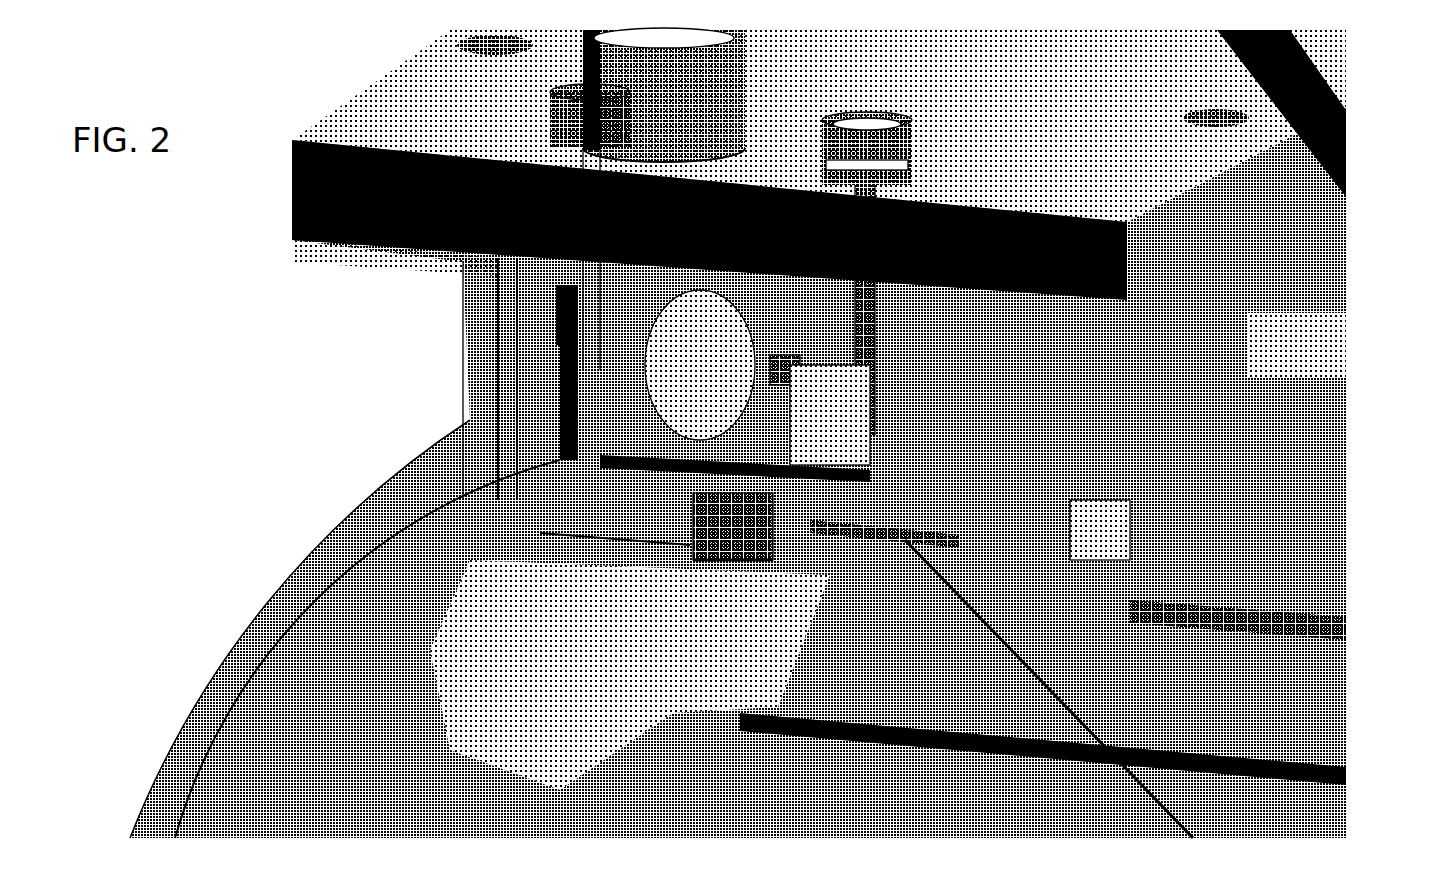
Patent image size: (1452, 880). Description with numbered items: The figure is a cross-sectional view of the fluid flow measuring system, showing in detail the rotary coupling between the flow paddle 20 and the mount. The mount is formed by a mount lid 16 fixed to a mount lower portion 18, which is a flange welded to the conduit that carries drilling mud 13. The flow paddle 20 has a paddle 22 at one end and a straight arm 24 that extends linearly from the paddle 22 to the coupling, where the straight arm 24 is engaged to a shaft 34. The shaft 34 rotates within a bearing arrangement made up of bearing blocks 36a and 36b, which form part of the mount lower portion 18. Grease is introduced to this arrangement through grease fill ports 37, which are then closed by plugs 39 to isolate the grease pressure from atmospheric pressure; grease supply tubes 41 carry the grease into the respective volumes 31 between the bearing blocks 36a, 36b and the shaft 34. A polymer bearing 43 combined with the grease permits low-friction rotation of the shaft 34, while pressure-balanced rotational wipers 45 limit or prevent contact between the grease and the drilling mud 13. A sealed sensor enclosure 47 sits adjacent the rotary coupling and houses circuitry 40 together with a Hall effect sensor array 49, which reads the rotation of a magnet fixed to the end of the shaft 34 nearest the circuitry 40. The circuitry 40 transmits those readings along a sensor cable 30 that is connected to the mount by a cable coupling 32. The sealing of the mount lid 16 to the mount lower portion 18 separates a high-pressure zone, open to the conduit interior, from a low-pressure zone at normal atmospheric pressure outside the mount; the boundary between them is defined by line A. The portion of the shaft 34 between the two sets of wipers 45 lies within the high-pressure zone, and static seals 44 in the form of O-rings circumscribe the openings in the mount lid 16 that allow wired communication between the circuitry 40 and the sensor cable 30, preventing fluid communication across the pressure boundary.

The drilling mud 13 is at (575, 799).
The mount lid 16 is at (370, 124).
The mount lower portion 18 is at (358, 258).
The flow paddle 20 is at (1150, 540).
The paddle 22 is at (1320, 620).
The straight arm 24 is at (1040, 533).
The sensor cable 30 is at (1323, 127).
The volume 31 is at (860, 432).
The cable coupling 32 is at (717, 78).
The shaft 34 is at (807, 420).
The bearing block 36a is at (607, 488).
The bearing block 36b is at (865, 517).
The grease fill port 37 is at (902, 179).
The plug 39 is at (877, 148).
The circuitry 40 is at (578, 423).
The grease supply tube 41 is at (862, 272).
The polymer bearing 43 is at (797, 380).
The static seal 44 is at (573, 256).
The rotational wiper 45 is at (783, 353).
The sealed sensor enclosure 47 is at (520, 407).
The Hall effect sensor array 49 is at (575, 394).
The line A is at (243, 687).